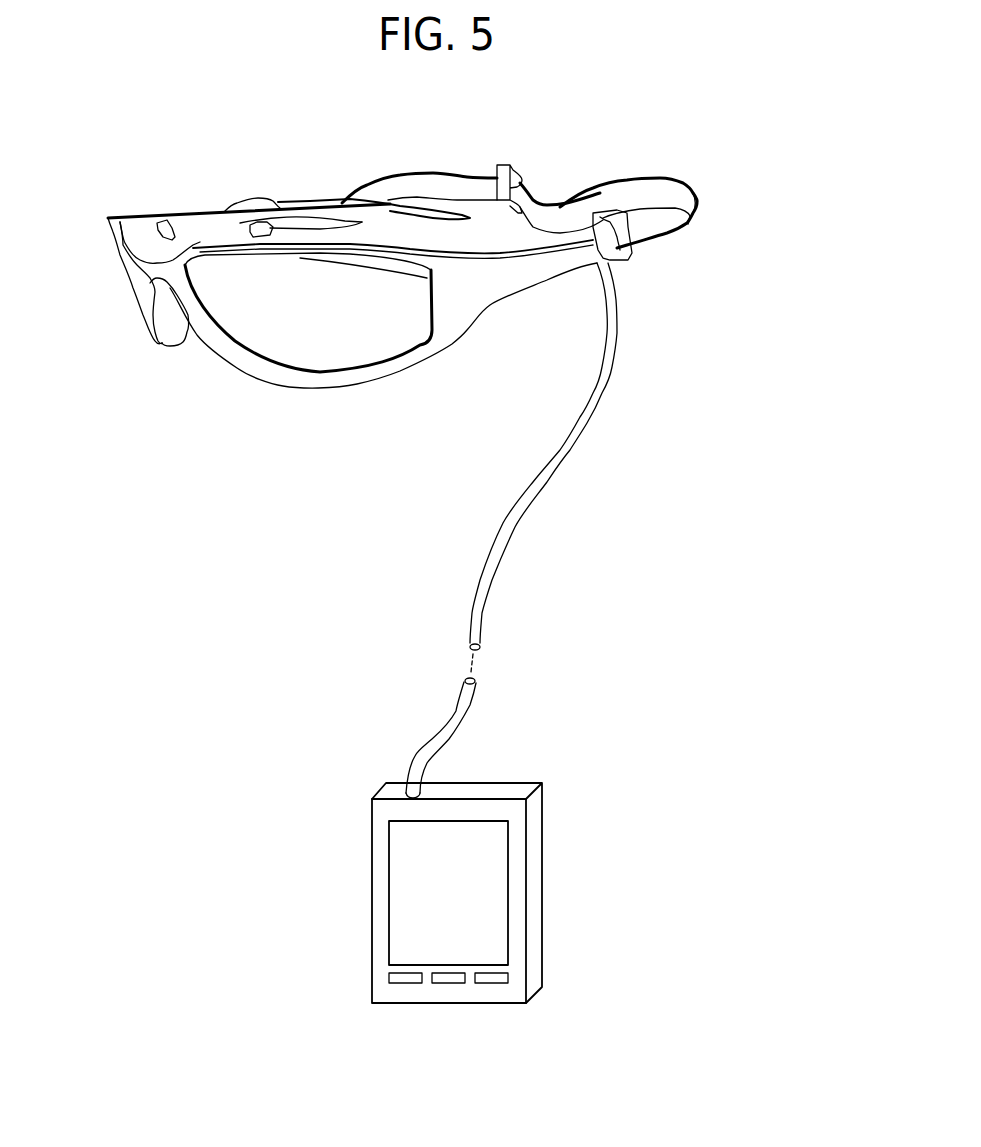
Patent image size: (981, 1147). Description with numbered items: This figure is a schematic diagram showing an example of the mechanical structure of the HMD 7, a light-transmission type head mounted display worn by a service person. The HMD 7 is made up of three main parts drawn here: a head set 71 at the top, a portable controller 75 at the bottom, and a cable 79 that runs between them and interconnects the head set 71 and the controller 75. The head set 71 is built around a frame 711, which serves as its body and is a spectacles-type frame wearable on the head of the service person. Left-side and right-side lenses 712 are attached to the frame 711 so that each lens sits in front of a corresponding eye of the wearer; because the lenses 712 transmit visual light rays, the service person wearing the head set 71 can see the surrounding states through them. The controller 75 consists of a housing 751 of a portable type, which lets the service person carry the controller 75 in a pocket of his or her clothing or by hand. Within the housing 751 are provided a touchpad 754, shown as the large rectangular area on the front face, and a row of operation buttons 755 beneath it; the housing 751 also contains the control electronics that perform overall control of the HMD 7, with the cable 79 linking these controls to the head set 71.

The HMD 7 is at (697, 170).
The head set 71 is at (135, 217).
The frame 711 is at (442, 332).
The lenses 712 is at (133, 288).
The cable 79 is at (573, 432).
The controller 75 is at (534, 836).
The housing 751 is at (536, 941).
The touchpad 754 is at (408, 908).
The operation buttons 755 is at (494, 983).